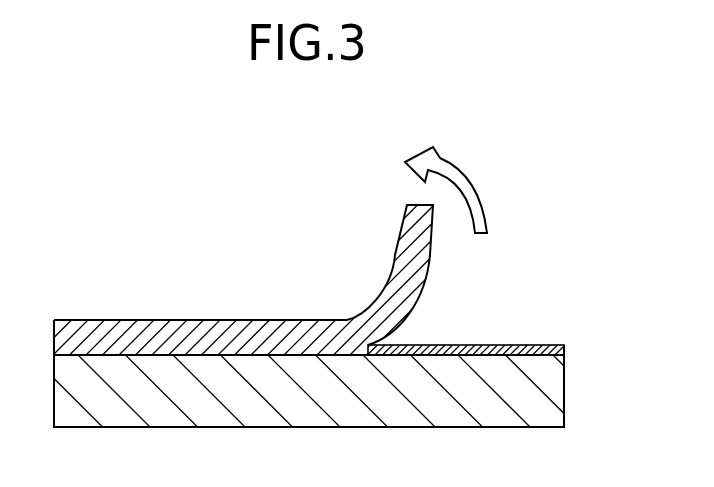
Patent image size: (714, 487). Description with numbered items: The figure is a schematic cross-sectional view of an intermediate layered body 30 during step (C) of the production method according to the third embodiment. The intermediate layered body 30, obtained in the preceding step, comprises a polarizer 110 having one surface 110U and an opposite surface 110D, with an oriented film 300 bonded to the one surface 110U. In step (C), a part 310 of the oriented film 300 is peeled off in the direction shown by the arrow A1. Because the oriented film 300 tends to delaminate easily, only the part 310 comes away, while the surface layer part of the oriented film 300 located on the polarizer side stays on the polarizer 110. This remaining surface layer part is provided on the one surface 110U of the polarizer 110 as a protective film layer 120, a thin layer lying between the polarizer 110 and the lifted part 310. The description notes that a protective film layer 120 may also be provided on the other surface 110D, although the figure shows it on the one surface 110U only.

The intermediate layered body 30 is at (160, 185).
The polarizer 110 is at (563, 388).
The one surface of the polarizer 110U is at (477, 347).
The other surface of the polarizer 110D is at (310, 427).
The protective film layer 120 is at (563, 348).
The oriented film 300 is at (143, 332).
The part of the oriented film 310 is at (399, 246).
The arrow A1 is at (465, 170).